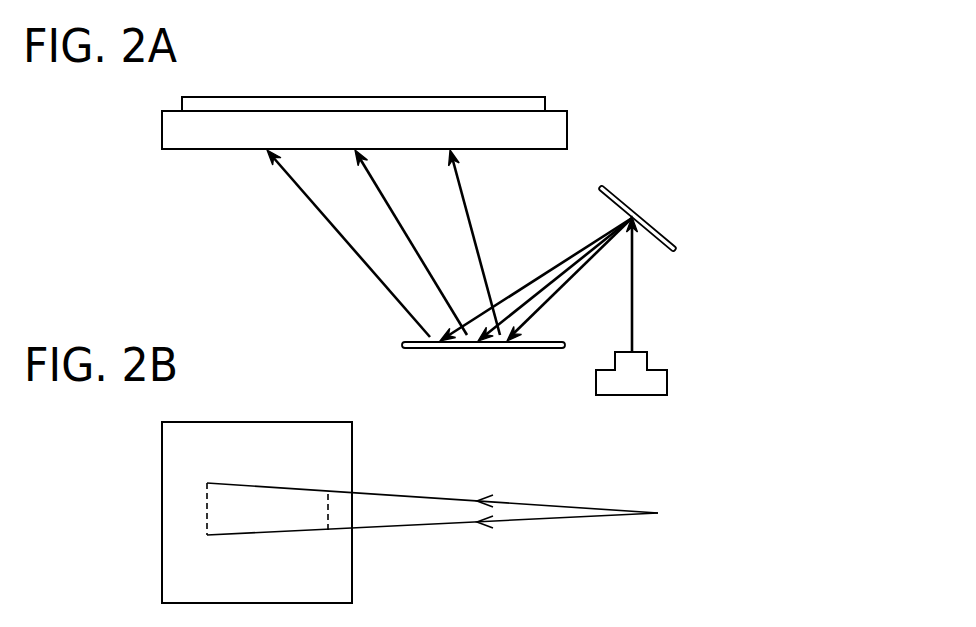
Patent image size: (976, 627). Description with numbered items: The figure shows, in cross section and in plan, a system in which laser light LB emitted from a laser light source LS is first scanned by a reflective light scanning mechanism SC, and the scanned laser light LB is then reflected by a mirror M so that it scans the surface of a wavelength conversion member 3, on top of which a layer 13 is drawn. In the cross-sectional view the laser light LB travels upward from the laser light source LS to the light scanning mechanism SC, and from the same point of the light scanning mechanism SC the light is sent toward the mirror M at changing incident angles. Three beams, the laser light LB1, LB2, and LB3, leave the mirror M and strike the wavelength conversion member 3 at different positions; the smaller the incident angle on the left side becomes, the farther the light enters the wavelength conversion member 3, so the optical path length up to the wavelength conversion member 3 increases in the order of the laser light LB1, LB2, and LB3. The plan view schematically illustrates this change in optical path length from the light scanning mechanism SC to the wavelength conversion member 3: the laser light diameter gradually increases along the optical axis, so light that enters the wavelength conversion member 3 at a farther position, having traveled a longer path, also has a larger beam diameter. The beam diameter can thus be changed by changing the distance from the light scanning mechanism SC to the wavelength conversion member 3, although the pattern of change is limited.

In FIG. 2A, the workpiece / coating layer 13 is at (545, 103).
In FIG. 2A, the wavelength conversion member 3 is at (557, 133).
In FIG. 2B, the wavelength conversion member 3 is at (352, 466).
In FIG. 2A, the laser light LB1 is at (462, 190).
In FIG. 2A, the laser light LB2 is at (393, 203).
In FIG. 2A, the laser light LB3 is at (318, 218).
In FIG. 2A, the laser light LB is at (636, 304).
In FIG. 2A, the mirror M is at (462, 350).
In FIG. 2A, the light scanning mechanism SC is at (657, 230).
In FIG. 2A, the laser light source LS is at (630, 396).